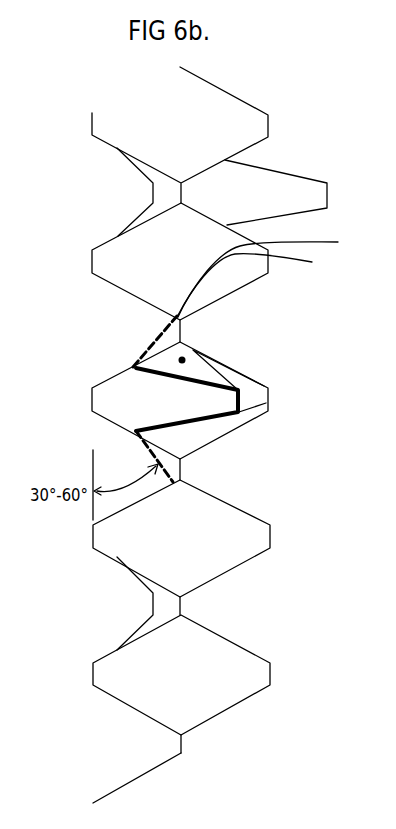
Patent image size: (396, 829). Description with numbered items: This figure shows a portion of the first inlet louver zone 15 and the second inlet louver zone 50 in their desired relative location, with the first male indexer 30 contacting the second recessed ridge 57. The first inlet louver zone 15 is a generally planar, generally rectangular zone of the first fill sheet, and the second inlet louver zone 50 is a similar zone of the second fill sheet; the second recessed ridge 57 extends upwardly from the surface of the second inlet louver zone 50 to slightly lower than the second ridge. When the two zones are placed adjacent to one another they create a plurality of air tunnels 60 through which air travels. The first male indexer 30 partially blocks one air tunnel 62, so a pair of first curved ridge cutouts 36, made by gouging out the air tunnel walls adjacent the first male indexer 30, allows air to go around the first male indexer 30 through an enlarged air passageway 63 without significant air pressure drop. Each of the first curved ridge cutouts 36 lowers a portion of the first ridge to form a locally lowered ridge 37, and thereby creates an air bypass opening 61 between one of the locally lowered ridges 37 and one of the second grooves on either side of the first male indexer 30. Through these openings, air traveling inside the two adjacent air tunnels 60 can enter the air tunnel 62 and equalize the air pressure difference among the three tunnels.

The first inlet louver zone 15 is at (123, 718).
The first male indexer 30 is at (160, 377).
The first curved ridge cutouts 36 is at (150, 332).
The locally lowered ridge 37 is at (271, 273).
The second inlet louver zone 50 is at (237, 722).
The second recessed ridge 57 is at (240, 393).
The air tunnels 60 is at (205, 220).
The air bypass opening 61 is at (263, 283).
The air tunnel 62 is at (242, 427).
The enlarged air passageway 63 is at (182, 360).